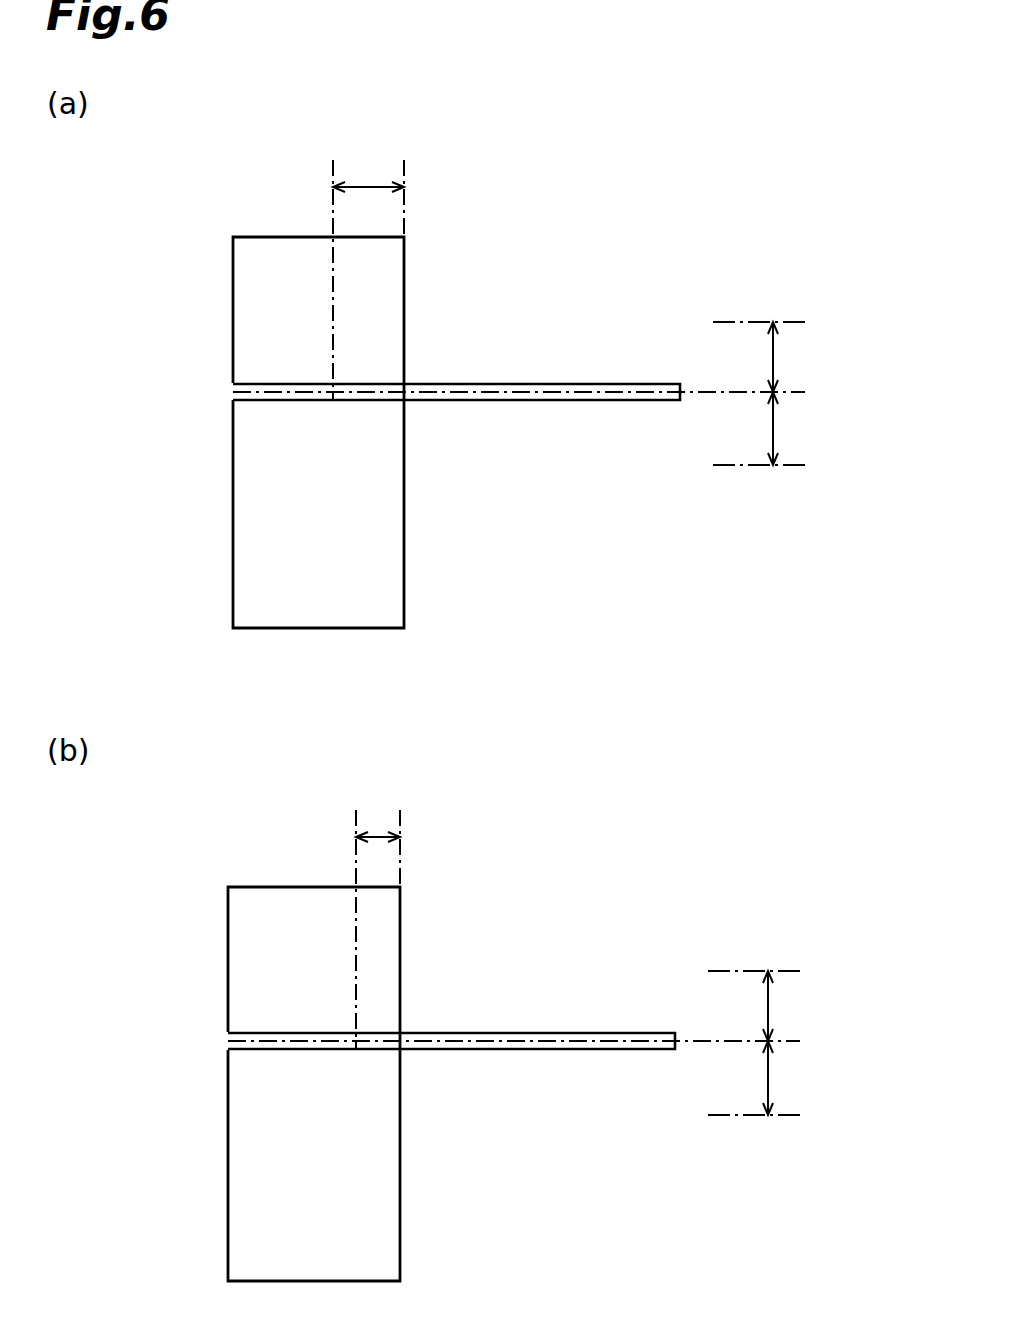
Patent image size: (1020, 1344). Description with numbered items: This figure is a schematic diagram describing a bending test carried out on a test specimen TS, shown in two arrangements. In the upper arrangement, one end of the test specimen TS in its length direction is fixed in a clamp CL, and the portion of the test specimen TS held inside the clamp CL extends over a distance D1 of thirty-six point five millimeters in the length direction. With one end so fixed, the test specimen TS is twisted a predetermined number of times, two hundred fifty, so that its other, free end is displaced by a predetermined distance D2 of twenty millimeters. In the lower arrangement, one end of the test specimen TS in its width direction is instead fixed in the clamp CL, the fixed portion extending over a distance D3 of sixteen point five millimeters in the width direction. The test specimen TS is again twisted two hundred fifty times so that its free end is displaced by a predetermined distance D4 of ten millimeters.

The test specimen TS is at (522, 384).
The clamp CL is at (233, 310).
The distance D1 is at (367, 187).
The distance D2 is at (775, 358).
The distance D3 is at (378, 837).
The distance D4 is at (770, 1008).